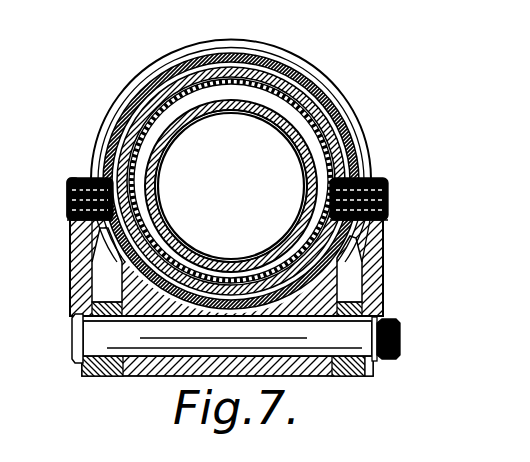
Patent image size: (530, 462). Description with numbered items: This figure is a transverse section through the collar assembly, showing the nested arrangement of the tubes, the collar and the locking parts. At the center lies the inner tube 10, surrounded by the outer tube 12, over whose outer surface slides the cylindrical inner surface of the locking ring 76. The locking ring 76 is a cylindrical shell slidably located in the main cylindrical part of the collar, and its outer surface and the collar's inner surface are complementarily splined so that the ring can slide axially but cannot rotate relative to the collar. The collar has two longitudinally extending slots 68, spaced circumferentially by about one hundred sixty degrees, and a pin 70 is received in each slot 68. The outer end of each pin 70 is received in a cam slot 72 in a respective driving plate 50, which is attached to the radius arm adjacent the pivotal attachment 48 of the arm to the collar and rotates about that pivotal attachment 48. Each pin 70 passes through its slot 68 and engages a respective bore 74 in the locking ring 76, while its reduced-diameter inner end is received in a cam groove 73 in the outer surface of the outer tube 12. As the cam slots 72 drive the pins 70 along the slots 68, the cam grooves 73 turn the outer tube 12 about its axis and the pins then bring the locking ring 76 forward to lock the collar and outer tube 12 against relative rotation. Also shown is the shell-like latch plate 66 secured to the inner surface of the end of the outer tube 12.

The inner tube 10 is at (302, 133).
The outer tube 12 is at (300, 108).
The pivotal attachment 48 is at (72, 326).
The driving plate 50 is at (70, 256).
The latch plate 66 is at (251, 77).
The slot 68 is at (91, 176).
The pin 70 is at (68, 220).
The cam slot 72 is at (68, 184).
The cam groove 73 is at (148, 161).
The bore 74 is at (313, 192).
The locking ring 76 is at (193, 52).